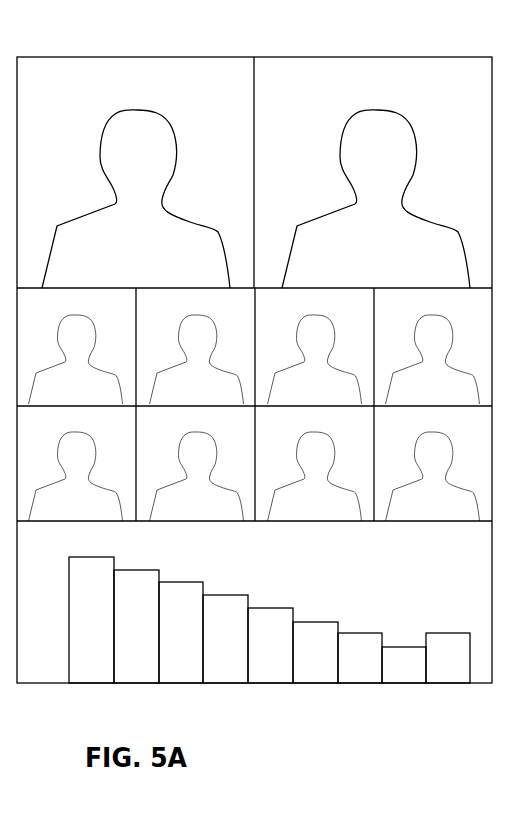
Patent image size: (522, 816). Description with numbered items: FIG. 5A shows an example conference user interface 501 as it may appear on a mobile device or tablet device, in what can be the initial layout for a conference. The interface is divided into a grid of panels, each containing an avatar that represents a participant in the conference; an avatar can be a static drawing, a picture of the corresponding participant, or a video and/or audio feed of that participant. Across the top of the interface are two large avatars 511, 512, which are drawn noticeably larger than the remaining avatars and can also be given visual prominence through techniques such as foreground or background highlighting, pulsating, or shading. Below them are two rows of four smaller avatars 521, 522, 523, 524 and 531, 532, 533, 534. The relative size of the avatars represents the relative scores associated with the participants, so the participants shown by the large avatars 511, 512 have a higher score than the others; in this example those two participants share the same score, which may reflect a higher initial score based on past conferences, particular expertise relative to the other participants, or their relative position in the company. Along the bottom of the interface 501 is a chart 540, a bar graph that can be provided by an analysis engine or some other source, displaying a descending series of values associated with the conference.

The display screen 501 is at (61, 37).
The avatar 511 is at (130, 193).
The avatar 512 is at (373, 193).
The avatar 521 is at (76, 352).
The avatar 522 is at (195, 352).
The avatar 523 is at (314, 352).
The avatar 524 is at (433, 352).
The avatar 531 is at (76, 471).
The avatar 532 is at (195, 471).
The avatar 533 is at (314, 471).
The avatar 534 is at (433, 471).
The chart 540 is at (269, 620).